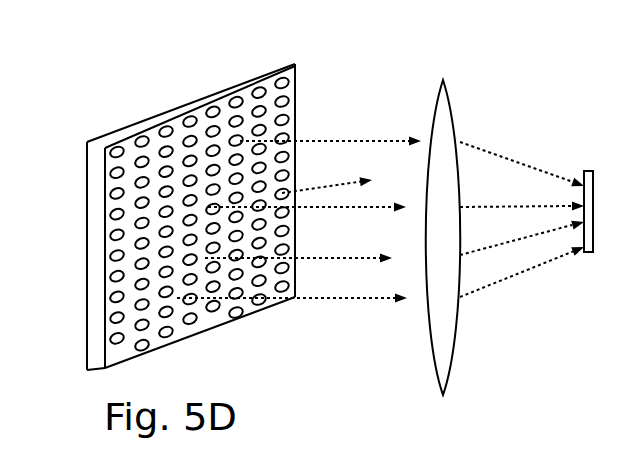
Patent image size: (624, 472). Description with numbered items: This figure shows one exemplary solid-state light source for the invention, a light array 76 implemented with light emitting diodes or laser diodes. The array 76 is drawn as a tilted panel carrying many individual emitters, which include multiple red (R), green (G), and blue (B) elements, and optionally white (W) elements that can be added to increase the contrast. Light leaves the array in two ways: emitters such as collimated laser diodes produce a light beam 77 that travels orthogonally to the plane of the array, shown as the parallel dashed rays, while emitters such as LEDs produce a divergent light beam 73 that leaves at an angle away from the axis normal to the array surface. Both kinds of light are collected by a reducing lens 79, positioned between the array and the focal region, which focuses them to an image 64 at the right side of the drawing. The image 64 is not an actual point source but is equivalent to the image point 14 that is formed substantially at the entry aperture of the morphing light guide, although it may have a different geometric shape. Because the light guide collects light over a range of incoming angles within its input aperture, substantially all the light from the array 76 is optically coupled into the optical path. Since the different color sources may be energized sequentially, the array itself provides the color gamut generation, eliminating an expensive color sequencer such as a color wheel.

The light array 76 is at (170, 94).
The white element W is at (238, 99).
The red element R is at (260, 86).
The green element G is at (285, 78).
The blue element B is at (286, 105).
The light beam 77 is at (360, 140).
The divergent light beam 73 is at (310, 186).
The reducing lens 79 is at (444, 78).
The image point 14 is at (579, 212).
The image 64 is at (586, 252).